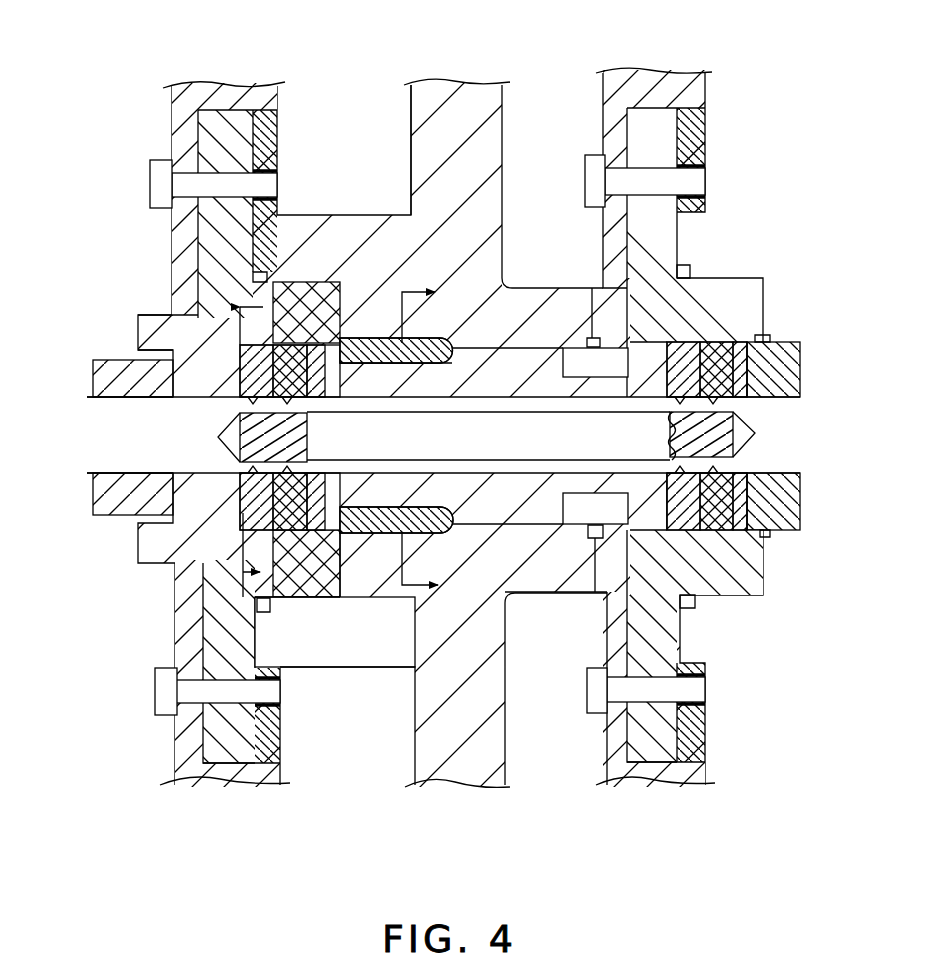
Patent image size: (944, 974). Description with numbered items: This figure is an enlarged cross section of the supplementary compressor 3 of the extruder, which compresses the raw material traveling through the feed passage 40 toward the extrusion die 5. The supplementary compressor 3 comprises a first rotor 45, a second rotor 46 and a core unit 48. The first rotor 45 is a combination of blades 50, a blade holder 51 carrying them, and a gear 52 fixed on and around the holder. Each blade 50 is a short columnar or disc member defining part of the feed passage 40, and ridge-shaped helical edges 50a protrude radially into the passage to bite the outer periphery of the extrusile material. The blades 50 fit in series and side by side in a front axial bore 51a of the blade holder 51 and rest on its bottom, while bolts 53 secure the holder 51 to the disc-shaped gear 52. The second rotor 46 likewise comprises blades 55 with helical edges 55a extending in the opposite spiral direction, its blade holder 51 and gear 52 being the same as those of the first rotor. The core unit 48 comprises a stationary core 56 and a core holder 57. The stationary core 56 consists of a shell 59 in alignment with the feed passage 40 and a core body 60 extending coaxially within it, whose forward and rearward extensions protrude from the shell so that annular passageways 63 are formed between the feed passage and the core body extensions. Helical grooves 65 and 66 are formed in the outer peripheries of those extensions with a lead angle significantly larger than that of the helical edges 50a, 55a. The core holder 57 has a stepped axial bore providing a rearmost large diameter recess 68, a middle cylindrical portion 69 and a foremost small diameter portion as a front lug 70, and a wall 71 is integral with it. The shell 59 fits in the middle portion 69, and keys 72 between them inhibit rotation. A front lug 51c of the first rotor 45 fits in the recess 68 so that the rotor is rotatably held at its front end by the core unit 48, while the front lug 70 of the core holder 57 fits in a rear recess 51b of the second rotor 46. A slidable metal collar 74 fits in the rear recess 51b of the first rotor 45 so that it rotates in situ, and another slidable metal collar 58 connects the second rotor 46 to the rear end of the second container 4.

The supplementary compressor 3 is at (770, 70).
The feed passage 40 is at (100, 515).
The first rotor 45 is at (177, 743).
The second rotor 46 is at (710, 737).
The core unit 48 is at (320, 667).
The blade 50 is at (300, 343).
The helical edges 50a is at (217, 567).
The blade holder 51 is at (205, 553).
The front axial bore 51a is at (753, 330).
The rear recess 51b is at (138, 358).
The front lug 51c is at (365, 560).
The gear 52 is at (267, 767).
The bolts 53 is at (160, 185).
The blades 55 is at (732, 340).
The helical edges 55a is at (685, 520).
The stationary core 56 is at (497, 445).
The core holder 57 is at (478, 627).
The slidable metal collar 58 is at (777, 363).
The shell 59 is at (507, 373).
The core body 60 is at (415, 440).
The annular passageways 63 is at (350, 340).
The helical grooves 65 is at (238, 425).
The helical grooves 66 is at (758, 432).
The rearmost large diameter recess 68 is at (338, 598).
The middle cylindrical portion 69 is at (468, 525).
The front lug 70 is at (615, 335).
The wall 71 is at (423, 125).
The keys 72 is at (400, 540).
The slidable metal collar 74 is at (117, 505).
The second container 4 is at (240, 436).
The extrusion die 5 is at (420, 439).